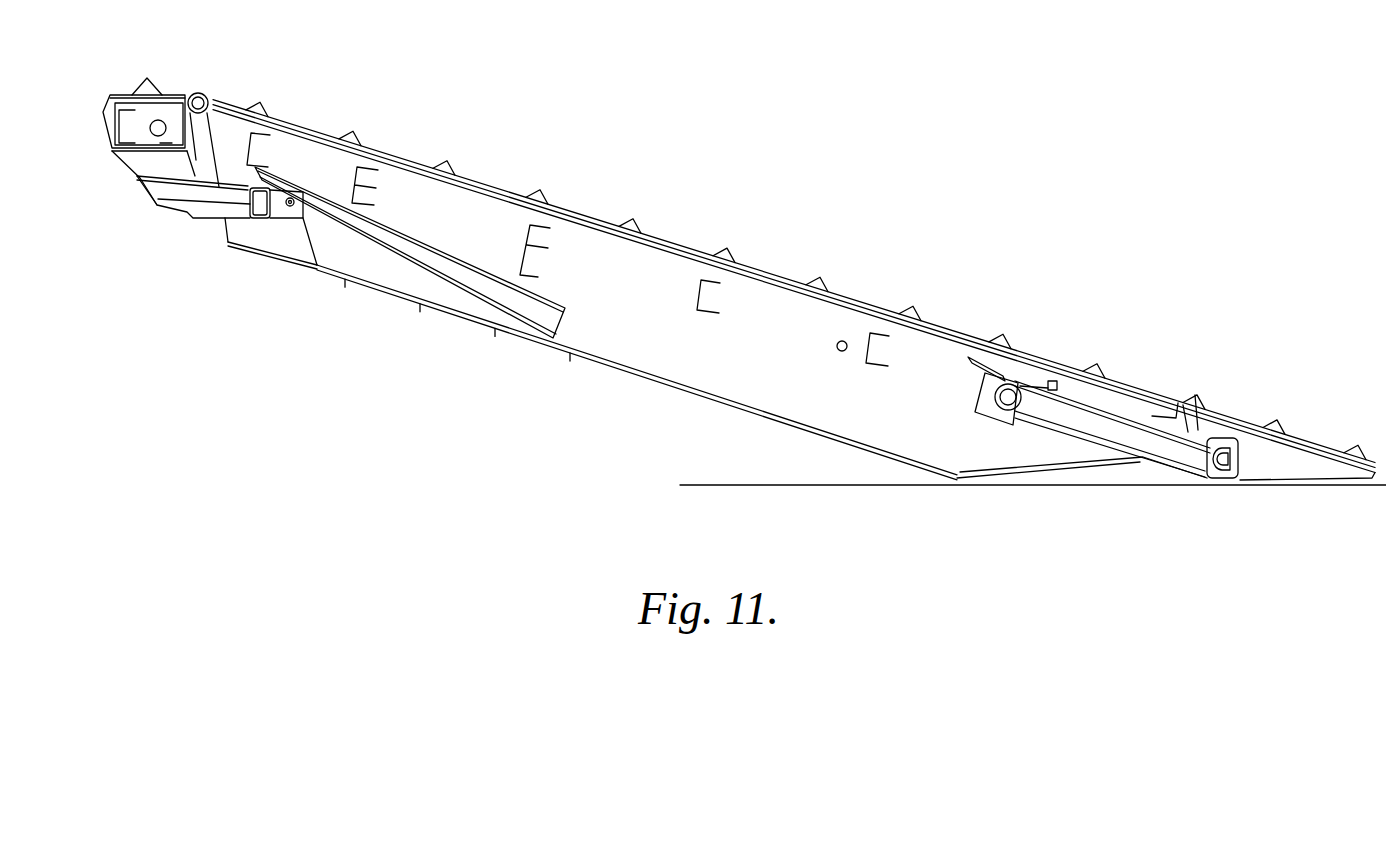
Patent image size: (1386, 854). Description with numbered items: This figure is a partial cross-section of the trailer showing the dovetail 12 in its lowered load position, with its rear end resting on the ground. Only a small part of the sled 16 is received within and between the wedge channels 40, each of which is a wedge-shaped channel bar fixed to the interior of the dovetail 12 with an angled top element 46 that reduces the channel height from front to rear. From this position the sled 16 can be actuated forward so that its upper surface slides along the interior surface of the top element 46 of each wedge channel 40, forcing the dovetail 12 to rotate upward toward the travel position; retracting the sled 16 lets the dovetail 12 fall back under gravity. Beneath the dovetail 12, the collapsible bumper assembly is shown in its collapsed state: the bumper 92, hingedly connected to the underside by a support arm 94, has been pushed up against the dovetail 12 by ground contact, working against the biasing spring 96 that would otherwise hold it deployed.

The dovetail 12 is at (760, 277).
The sled 16 is at (208, 215).
The wedge channel 40 is at (578, 330).
The top element 46 is at (447, 248).
The bumper 92 is at (1219, 463).
The support arm 94 is at (1117, 427).
The biasing spring 96 is at (975, 363).